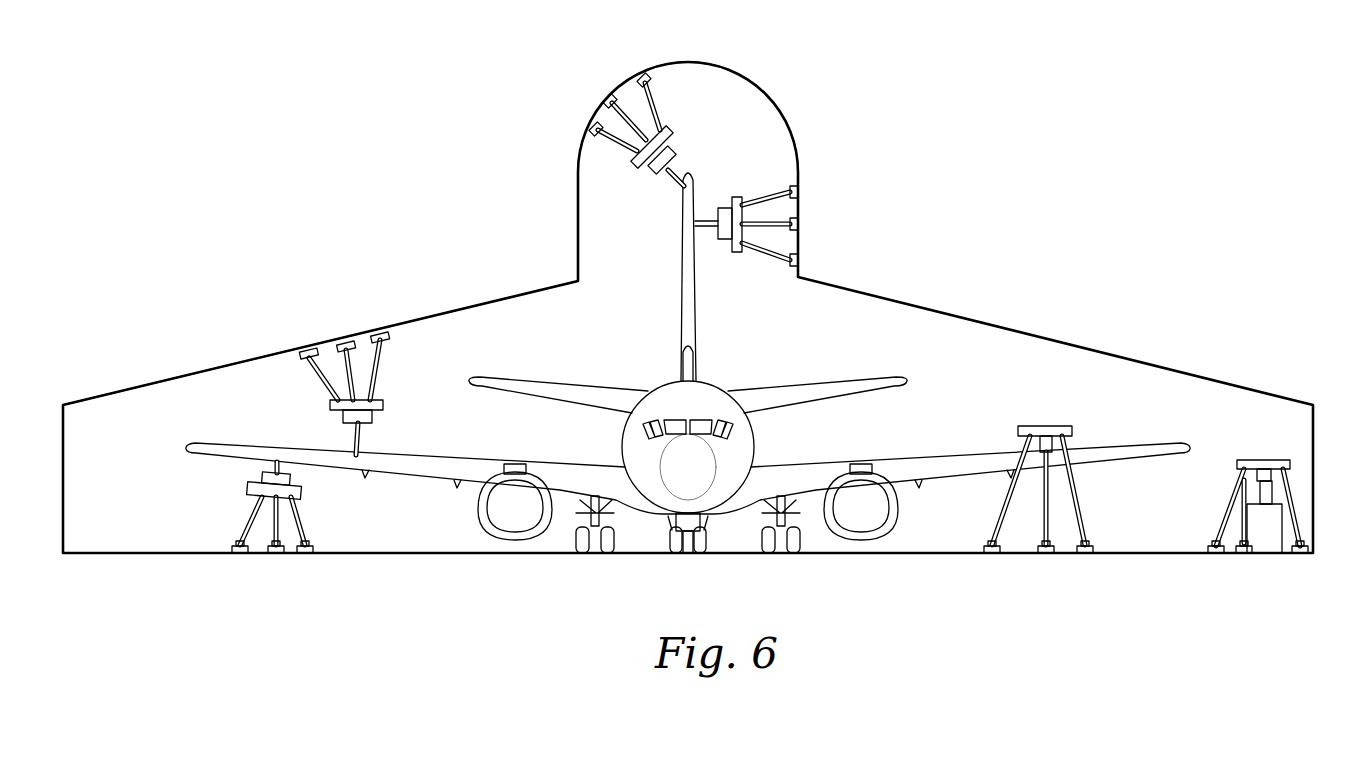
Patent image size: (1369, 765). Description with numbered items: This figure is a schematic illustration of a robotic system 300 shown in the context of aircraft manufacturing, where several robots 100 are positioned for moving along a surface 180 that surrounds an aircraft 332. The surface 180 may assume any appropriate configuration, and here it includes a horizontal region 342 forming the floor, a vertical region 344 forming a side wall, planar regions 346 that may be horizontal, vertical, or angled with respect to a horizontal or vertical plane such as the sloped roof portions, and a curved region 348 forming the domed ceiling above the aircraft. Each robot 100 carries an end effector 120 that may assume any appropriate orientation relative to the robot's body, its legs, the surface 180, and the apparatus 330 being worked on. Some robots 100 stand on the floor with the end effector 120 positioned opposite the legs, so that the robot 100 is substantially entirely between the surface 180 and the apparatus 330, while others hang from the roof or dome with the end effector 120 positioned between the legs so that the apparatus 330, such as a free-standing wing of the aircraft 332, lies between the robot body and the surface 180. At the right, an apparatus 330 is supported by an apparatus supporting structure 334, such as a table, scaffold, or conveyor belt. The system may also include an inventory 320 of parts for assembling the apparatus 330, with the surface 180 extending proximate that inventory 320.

The robot 100 is at (783, 342).
The end effector 120 is at (652, 172).
The surface 180 is at (586, 262).
The robotic system 300 is at (688, 307).
The inventory 320 is at (688, 363).
The apparatus 330 is at (1271, 487).
The aircraft 332 is at (669, 289).
The apparatus supporting structure 334 is at (1266, 542).
The horizontal region 342 is at (170, 553).
The vertical region 344 is at (63, 438).
The planar region 346 is at (65, 538).
The curved region 348 is at (753, 80).